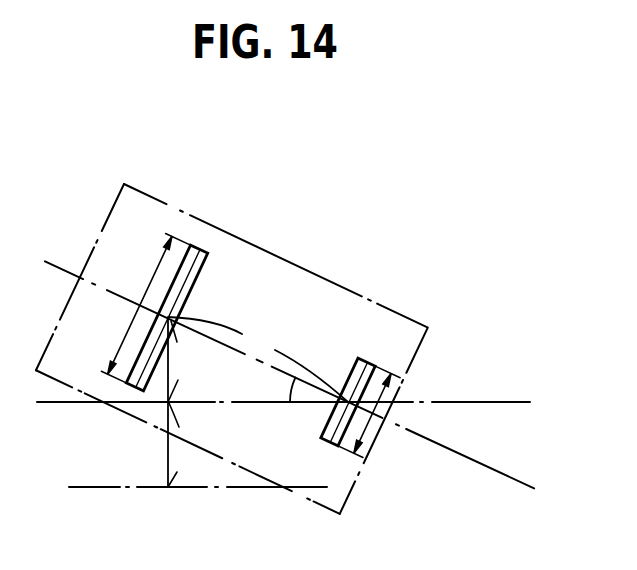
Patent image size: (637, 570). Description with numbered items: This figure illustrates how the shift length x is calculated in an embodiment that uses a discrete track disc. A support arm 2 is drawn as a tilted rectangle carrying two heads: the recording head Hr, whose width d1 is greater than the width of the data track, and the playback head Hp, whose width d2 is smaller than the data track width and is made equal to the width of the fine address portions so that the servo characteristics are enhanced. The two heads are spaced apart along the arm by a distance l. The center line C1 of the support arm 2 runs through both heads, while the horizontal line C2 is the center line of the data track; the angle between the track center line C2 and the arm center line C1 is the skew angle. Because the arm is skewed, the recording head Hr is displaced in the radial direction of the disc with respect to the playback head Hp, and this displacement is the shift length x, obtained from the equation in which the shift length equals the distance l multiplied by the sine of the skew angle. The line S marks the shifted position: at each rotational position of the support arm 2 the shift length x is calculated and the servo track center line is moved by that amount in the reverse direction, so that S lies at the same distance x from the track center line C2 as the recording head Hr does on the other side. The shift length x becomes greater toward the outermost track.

The head base 2 is at (166, 205).
The recording head Hr is at (208, 251).
The playback head Hp is at (362, 355).
The width of the recording head d1 is at (136, 303).
The width of the playback head d2 is at (364, 432).
The distance between the playback head and the recording head l is at (258, 359).
The shift length x is at (177, 402).
The shifted position S is at (258, 491).
The center line of the support arm C1 is at (497, 468).
The center line of the data track C2 is at (472, 402).